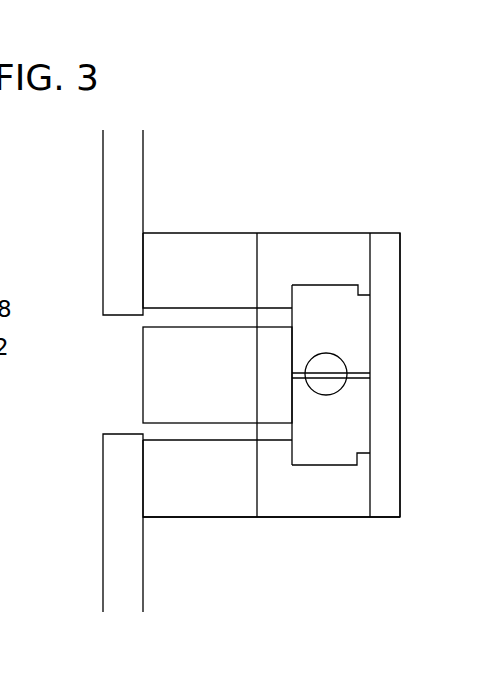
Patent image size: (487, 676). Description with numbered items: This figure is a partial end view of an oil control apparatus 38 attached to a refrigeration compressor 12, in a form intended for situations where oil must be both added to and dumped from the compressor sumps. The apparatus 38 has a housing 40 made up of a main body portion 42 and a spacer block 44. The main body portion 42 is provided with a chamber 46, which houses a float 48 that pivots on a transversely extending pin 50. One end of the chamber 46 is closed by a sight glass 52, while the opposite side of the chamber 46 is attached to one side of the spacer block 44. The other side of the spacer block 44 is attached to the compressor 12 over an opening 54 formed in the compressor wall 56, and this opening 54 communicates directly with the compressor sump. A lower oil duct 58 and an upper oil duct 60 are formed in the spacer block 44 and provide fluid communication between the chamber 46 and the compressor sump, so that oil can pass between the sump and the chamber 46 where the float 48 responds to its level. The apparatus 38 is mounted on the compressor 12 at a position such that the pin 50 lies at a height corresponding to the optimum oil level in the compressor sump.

The compressor 12 is at (157, 150).
The apparatus 38 is at (328, 167).
The sight glass 52 is at (381, 232).
The upper oil duct 60 is at (190, 318).
The chamber 46 is at (335, 311).
The float 48 is at (340, 360).
The pin 50 is at (372, 375).
The opening 54 is at (113, 377).
The compressor wall 56 is at (118, 548).
The lower oil duct 58 is at (187, 432).
The spacer block 44 is at (221, 522).
The housing 40 is at (283, 538).
The main body portion 42 is at (340, 518).